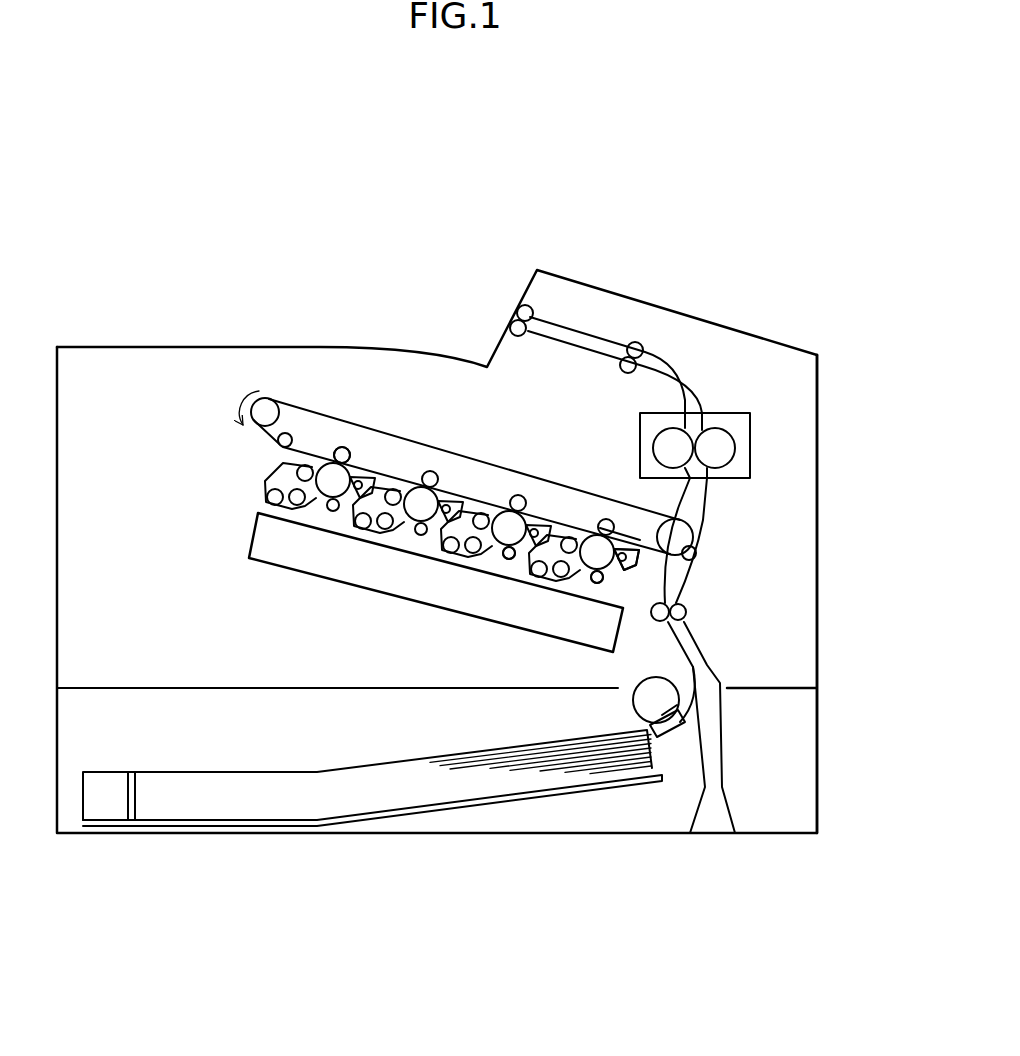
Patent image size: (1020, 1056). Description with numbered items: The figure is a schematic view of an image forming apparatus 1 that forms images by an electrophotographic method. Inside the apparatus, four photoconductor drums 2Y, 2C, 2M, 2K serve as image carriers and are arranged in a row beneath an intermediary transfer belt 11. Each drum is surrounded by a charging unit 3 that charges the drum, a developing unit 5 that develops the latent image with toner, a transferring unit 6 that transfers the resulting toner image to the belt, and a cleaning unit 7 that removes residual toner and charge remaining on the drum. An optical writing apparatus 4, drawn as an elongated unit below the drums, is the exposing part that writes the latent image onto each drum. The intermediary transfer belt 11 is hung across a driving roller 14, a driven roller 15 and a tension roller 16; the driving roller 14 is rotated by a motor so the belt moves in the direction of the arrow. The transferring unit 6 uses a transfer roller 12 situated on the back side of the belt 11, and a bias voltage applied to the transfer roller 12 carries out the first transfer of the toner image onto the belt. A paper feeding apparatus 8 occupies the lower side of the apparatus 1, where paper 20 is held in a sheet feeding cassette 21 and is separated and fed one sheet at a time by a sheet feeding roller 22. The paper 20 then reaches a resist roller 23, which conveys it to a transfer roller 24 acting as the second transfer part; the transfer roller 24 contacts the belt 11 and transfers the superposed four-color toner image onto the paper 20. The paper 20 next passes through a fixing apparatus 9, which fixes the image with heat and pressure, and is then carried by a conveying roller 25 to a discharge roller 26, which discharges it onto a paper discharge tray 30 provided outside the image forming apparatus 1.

The image forming apparatus 1 is at (114, 328).
The paper discharge tray 30 is at (366, 345).
The paper feeding apparatus 8 is at (820, 771).
The intermediary transfer belt 11 is at (286, 393).
The driven roller 15 is at (262, 412).
The tension roller 16 is at (272, 437).
The photoconductor drum 2Y is at (331, 476).
The photoconductor drum 2C is at (419, 500).
The photoconductor drum 2M is at (507, 524).
The photoconductor drum 2K is at (595, 548).
The transfer roller 12 is at (343, 449).
The developing unit 5 is at (526, 578).
The charging unit 3 is at (588, 585).
The cleaning unit 7 is at (644, 562).
The transferring unit 6 is at (622, 522).
The optical writing apparatus 4 is at (292, 570).
The discharge roller 26 is at (528, 307).
The conveying roller 25 is at (636, 343).
The fixing apparatus 9 is at (738, 407).
The driving roller 14 is at (694, 538).
The transfer roller 24 is at (697, 553).
The resist roller 23 is at (687, 613).
The sheet feeding roller 22 is at (645, 705).
The paper 20 is at (466, 782).
The sheet feeding cassette 21 is at (620, 796).